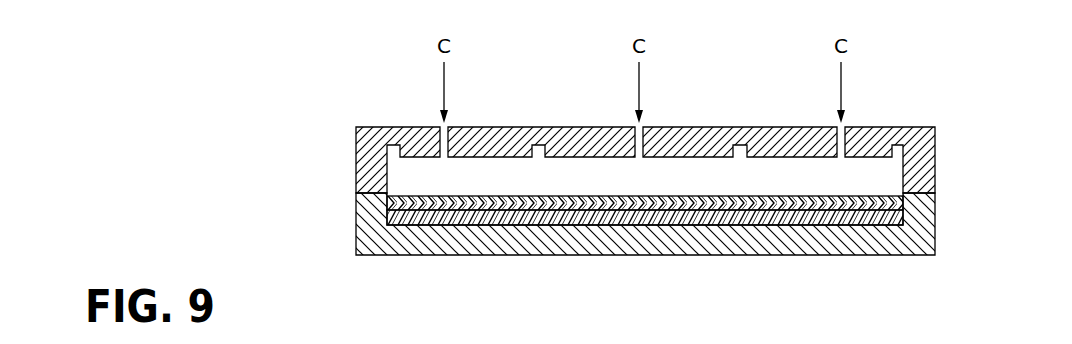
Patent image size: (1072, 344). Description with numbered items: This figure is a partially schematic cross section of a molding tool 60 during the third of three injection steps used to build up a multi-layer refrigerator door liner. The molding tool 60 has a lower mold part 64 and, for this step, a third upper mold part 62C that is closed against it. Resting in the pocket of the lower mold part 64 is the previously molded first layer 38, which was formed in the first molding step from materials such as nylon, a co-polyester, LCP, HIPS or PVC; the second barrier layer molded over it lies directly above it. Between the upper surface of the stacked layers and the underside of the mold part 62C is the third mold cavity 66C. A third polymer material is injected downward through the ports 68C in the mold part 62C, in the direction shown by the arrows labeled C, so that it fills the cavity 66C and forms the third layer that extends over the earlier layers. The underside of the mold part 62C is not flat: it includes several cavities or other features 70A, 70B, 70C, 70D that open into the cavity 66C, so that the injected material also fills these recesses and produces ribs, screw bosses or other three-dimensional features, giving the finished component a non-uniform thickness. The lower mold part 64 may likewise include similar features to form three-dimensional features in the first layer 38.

The first layer 38 is at (392, 217).
The molding tool 60 is at (652, 172).
The third upper mold part 62C is at (935, 143).
The lower mold part 64 is at (935, 227).
The third mold cavity 66C is at (703, 190).
The ports 68C is at (447, 128).
The cavity feature 70A is at (393, 152).
The cavity feature 70B is at (538, 153).
The cavity feature 70C is at (741, 152).
The cavity feature 70D is at (897, 152).